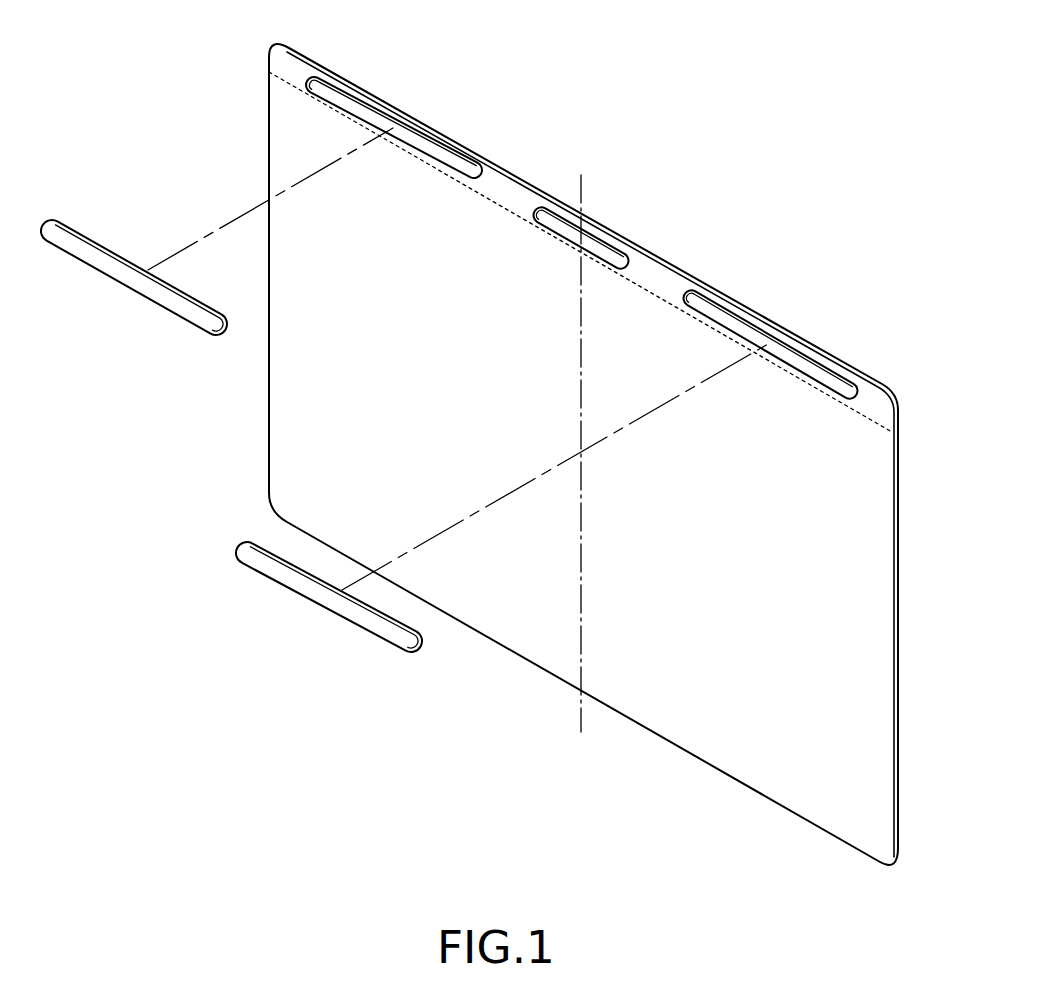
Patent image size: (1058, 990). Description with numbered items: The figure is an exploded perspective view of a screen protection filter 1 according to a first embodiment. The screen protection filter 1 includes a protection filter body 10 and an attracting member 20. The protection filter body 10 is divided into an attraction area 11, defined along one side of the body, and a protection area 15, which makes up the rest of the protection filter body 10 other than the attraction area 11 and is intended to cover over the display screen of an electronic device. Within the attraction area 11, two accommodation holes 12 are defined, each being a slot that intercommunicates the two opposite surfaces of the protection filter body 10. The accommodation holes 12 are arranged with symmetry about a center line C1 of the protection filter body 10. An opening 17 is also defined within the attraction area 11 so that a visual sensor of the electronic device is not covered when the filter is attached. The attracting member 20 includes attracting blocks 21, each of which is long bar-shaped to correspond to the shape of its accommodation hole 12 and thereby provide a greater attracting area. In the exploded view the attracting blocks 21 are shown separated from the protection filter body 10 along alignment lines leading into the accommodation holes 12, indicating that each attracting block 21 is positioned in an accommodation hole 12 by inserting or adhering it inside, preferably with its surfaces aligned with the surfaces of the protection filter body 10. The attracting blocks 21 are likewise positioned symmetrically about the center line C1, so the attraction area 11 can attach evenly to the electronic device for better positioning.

The screen protection filter 1 is at (940, 120).
The protection filter body 10 is at (200, 43).
The attraction area 11 is at (287, 65).
The accommodation hole 12 is at (440, 153).
The protection area 15 is at (287, 128).
The opening 17 is at (610, 255).
The attracting member 20 is at (188, 370).
The attracting block 21 is at (210, 327).
The center line C1 is at (582, 440).